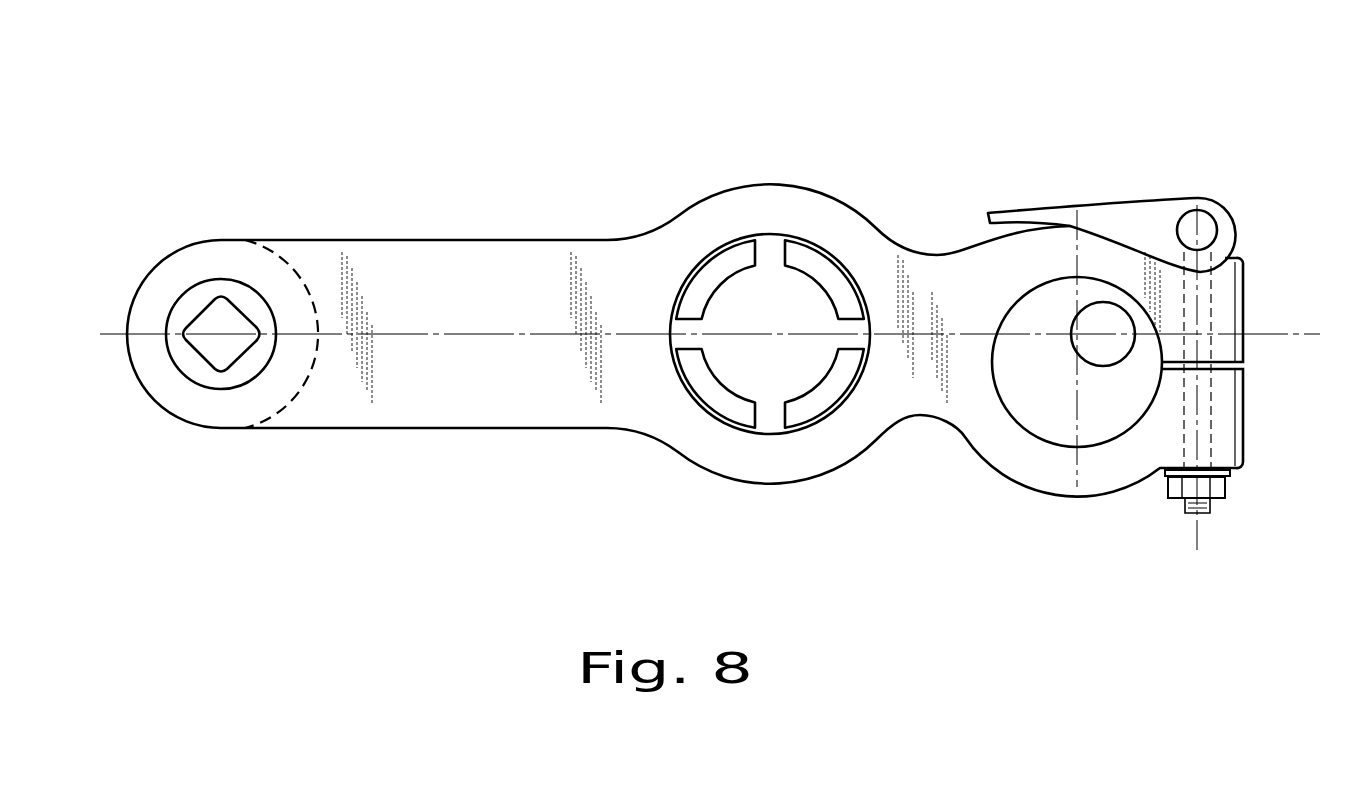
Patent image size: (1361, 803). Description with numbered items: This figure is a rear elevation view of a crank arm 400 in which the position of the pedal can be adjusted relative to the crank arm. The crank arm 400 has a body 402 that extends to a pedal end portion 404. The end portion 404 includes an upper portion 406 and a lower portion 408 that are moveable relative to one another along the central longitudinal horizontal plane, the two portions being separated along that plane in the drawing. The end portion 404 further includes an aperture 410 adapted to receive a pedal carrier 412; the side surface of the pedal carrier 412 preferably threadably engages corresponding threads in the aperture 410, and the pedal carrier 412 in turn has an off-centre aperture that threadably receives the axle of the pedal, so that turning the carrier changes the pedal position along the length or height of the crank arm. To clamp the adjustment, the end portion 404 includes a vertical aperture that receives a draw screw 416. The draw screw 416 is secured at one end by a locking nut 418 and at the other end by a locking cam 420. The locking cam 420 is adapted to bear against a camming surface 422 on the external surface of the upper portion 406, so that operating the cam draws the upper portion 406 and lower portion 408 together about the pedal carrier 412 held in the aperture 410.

The crank arm 400 is at (685, 267).
The body 402 is at (552, 262).
The pedal end portion 404 is at (1114, 374).
The upper portion 406 is at (1245, 302).
The lower portion 408 is at (1243, 400).
The aperture 410 is at (1003, 408).
The pedal carrier 412 is at (1023, 312).
The draw screw 416 is at (1190, 507).
The locking nut 418 is at (1230, 483).
The locking cam 420 is at (1163, 157).
The camming surface 422 is at (1240, 257).